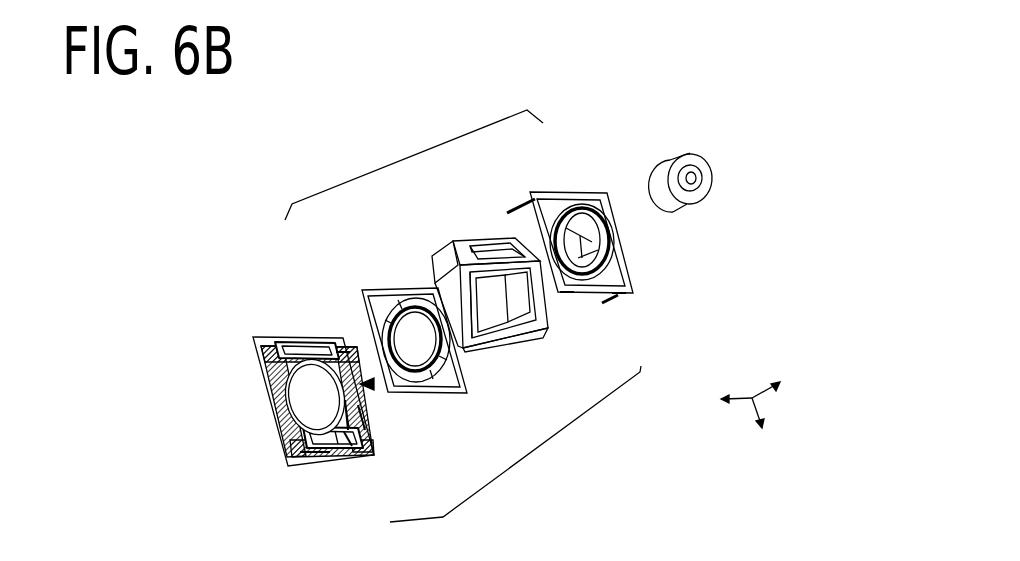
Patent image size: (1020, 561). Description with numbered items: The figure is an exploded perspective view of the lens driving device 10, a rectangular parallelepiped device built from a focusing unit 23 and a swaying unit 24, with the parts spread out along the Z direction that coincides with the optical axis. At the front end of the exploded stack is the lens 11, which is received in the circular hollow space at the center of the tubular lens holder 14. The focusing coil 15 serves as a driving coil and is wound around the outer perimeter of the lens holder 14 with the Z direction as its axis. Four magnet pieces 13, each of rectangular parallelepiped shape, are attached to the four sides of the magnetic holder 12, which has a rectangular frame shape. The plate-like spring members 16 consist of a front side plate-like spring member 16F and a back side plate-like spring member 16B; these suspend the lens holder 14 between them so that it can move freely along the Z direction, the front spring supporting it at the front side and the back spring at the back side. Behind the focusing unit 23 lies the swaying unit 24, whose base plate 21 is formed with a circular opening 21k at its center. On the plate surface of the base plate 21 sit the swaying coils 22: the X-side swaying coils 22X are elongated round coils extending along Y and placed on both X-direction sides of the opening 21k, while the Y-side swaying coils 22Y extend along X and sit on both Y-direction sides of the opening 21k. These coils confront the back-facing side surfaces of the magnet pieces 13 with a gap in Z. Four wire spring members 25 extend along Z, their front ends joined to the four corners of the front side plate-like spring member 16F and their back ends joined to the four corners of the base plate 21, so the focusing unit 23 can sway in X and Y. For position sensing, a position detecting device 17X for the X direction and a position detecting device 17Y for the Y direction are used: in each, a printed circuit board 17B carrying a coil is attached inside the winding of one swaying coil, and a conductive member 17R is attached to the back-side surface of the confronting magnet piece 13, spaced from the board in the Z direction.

The lens driving device 10 is at (227, 195).
The lens 11 is at (713, 175).
The magnetic holder 12 is at (436, 250).
The magnet pieces 13 is at (487, 242).
The lens holder 14 is at (623, 227).
The focusing coil 15 is at (565, 292).
The plate-like spring members 16 is at (492, 259).
The back side plate-like spring member 16B is at (361, 289).
The front side plate-like spring member 16F is at (556, 192).
The conductive member 17R is at (366, 386).
The printed circuit board 17B is at (364, 418).
The position detecting device for the X direction 17X is at (359, 404).
The position detecting device for the Y direction 17Y is at (319, 395).
The base plate 21 is at (286, 455).
The circular opening 21k is at (271, 397).
The swaying coils 22 is at (264, 366).
The X-side swaying coils 22X is at (262, 340).
The Y-side swaying coils 22Y is at (313, 334).
The focusing unit 23 is at (409, 158).
The swaying unit 24 is at (550, 438).
The wire spring members 25 is at (617, 297).